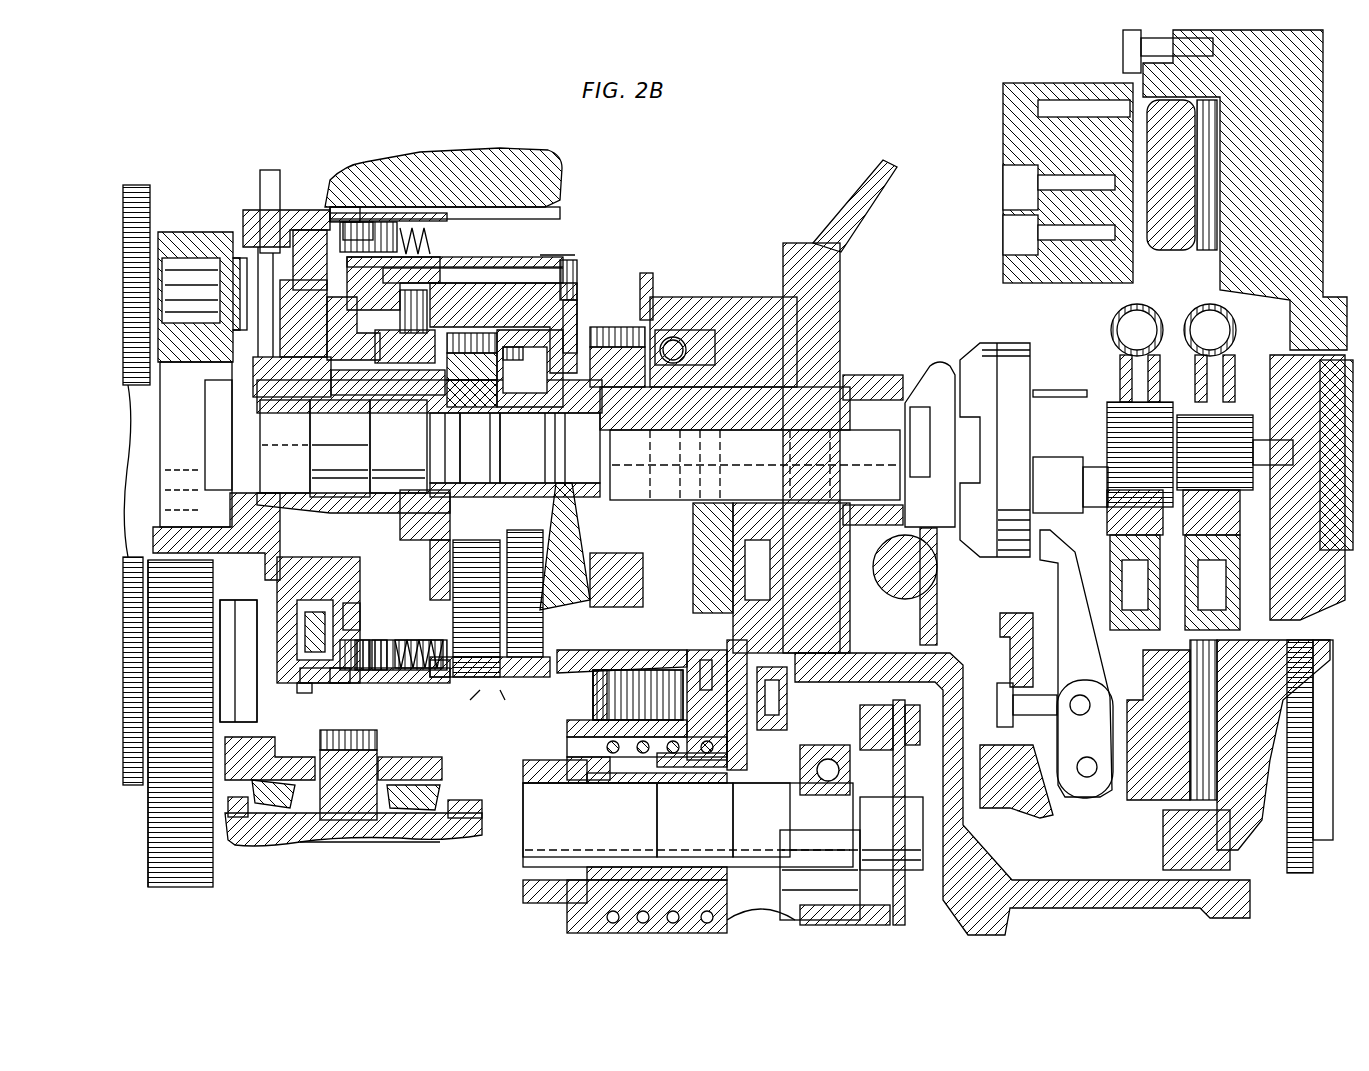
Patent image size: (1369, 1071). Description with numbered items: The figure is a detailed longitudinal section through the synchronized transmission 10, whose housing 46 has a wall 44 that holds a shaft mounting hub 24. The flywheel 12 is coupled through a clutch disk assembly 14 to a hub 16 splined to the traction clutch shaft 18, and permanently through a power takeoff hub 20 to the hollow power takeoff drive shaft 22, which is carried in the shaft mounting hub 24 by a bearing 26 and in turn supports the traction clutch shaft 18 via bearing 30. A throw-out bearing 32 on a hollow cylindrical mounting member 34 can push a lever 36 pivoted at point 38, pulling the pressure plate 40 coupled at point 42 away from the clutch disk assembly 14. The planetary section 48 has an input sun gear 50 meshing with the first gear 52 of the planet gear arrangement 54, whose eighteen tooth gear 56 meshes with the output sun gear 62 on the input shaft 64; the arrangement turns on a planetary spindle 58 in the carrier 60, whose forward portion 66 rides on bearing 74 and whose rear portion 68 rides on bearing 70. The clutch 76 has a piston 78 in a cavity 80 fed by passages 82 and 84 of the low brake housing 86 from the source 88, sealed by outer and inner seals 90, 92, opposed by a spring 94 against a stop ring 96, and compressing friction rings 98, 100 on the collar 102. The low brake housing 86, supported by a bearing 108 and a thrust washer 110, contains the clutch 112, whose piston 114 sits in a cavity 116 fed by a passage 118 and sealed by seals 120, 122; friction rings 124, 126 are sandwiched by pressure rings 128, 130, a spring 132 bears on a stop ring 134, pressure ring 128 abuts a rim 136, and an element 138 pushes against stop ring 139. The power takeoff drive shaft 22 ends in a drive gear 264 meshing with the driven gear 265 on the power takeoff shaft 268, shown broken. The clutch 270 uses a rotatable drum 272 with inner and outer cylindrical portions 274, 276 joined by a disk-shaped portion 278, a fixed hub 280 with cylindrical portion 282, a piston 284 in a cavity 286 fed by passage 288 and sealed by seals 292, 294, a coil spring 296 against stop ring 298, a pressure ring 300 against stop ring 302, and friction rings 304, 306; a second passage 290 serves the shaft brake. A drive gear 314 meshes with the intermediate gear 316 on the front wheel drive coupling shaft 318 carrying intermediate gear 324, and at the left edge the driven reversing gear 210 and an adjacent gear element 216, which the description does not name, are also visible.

The synchronized transmission 10 is at (819, 115).
The flywheel 12 is at (1268, 860).
The clutch disk assembly 14 is at (1185, 658).
The hub 16 is at (1210, 612).
The traction clutch shaft 18 is at (1258, 397).
The power takeoff hub 20 is at (1108, 327).
The power takeoff drive shaft 22 is at (1067, 458).
The shaft mounting hub 24 is at (897, 548).
The bearing 26 is at (792, 398).
The bearing 30 is at (640, 400).
The throw-out bearing 32 is at (945, 378).
The hollow cylindrical mounting member 34 is at (893, 380).
The lever 36 is at (1050, 575).
The pivot point 38 is at (1090, 703).
The pressure plate 40 is at (1155, 800).
The coupling point 42 is at (1088, 777).
The wall 44 is at (845, 312).
The housing 46 is at (193, 229).
The planetary section 48 is at (549, 240).
The input sun gear 50 is at (520, 358).
The first gear 52 is at (523, 535).
The planet gear arrangement 54 is at (500, 700).
The eighteen tooth gear 56 is at (456, 614).
The planetary spindle 58 is at (585, 555).
The carrier 60 is at (572, 290).
The output sun gear 62 is at (512, 330).
The input shaft 64 is at (453, 448).
The forward portion 66 is at (505, 258).
The rear portion 68 is at (305, 394).
The bearing 70 is at (300, 448).
The bearing 74 is at (550, 448).
The clutch 76 is at (450, 280).
The piston 78 is at (388, 312).
The cavity 80 is at (385, 492).
The passage 82 is at (310, 492).
The passage 84 is at (270, 330).
The low brake housing 86 is at (330, 210).
The source of pressurized hydraulic fluid 88 is at (275, 160).
The outer seal 90 is at (362, 318).
The inner seal 92 is at (380, 400).
The ring-shaped spring 94 is at (440, 373).
The stop ring 96 is at (440, 393).
The first plurality of friction rings 98 is at (400, 620).
The second plurality of friction rings 100 is at (440, 548).
The collar 102 is at (455, 330).
The bearing 108 is at (315, 545).
The thrust washer 110 is at (395, 362).
The clutch 112 is at (446, 200).
The piston 114 is at (265, 643).
The cavity 116 is at (310, 215).
The passage 118 is at (283, 268).
The seal 120 is at (305, 683).
The seal 122 is at (315, 600).
The first plurality of friction rings 124 is at (360, 670).
The second plurality of friction rings 126 is at (420, 670).
The pressure ring 128 is at (375, 670).
The pressure ring 130 is at (475, 700).
The ring-shaped spring 132 is at (440, 680).
The stop ring 134 is at (440, 700).
The rim 136 is at (335, 683).
The element 138 is at (370, 207).
The stop ring 139 is at (320, 629).
The driven reversing gear 210 is at (150, 760).
The ring gear 216 is at (130, 183).
The drive gear 264 is at (610, 340).
The driven gear 265 is at (630, 598).
The power takeoff shaft 268 is at (240, 850).
The clutch 270 is at (524, 752).
The rotatable drum 272 is at (840, 900).
The inner cylindrical portion 274 is at (703, 775).
The outer cylindrical portion 276 is at (715, 603).
The hollow disk-shaped portion 278 is at (750, 760).
The fixed hub 280 is at (523, 890).
The cylindrical portion 282 is at (567, 925).
The piston 284 is at (760, 660).
The cavity 286 is at (775, 925).
The passage 288 is at (808, 778).
The second passage 290 is at (905, 622).
The seal 292 is at (677, 770).
The seal 294 is at (705, 660).
The coil spring 296 is at (640, 765).
The stop ring 298 is at (590, 770).
The pressure ring 300 is at (593, 703).
The stop ring 302 is at (593, 686).
The first plurality of friction rings 304 is at (567, 728).
The second plurality of friction rings 306 is at (622, 652).
The drive gear 314 is at (180, 765).
The intermediate gear 316 is at (200, 852).
The front wheel drive coupling shaft 318 is at (355, 840).
The intermediate gear 324 is at (378, 745).